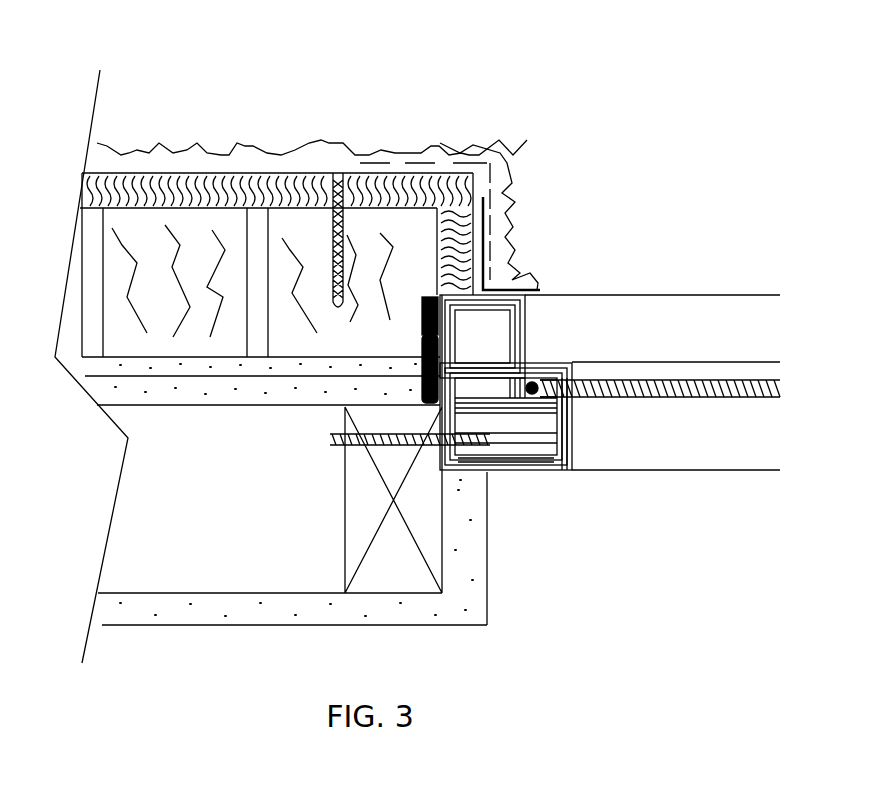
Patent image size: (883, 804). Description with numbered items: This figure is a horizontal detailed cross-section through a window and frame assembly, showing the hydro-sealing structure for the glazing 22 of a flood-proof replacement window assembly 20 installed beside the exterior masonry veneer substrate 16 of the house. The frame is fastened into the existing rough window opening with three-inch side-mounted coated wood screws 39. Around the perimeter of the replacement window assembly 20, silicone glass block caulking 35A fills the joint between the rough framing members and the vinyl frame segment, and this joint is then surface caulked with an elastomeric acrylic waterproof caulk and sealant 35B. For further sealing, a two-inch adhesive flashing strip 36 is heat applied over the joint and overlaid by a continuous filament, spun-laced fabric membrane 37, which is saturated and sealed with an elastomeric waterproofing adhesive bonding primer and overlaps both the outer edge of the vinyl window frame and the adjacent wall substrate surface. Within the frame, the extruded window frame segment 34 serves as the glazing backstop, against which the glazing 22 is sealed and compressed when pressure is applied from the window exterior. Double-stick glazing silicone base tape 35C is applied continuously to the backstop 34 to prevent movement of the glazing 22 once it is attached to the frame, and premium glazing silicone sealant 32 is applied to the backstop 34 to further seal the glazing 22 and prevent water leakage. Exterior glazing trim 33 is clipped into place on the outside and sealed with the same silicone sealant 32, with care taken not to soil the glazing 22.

The exterior masonry veneer substrate 16 is at (198, 235).
The fabric membrane 37 is at (425, 163).
The adhesive flashing strip 36 is at (483, 197).
The glazing silicone sealant 32 is at (533, 382).
The exterior glazing trim 33 is at (540, 383).
The elastomeric acrylic waterproof caulk and sealant 35B is at (422, 315).
The silicone glass block caulking 35A is at (423, 387).
The double-stick glazing silicone base tape 35C is at (572, 417).
The glazing 22 is at (690, 397).
The replacement window assembly 20 is at (673, 472).
The side-mounted coated wood screws 39 is at (505, 447).
The window frame segment 34 is at (530, 413).